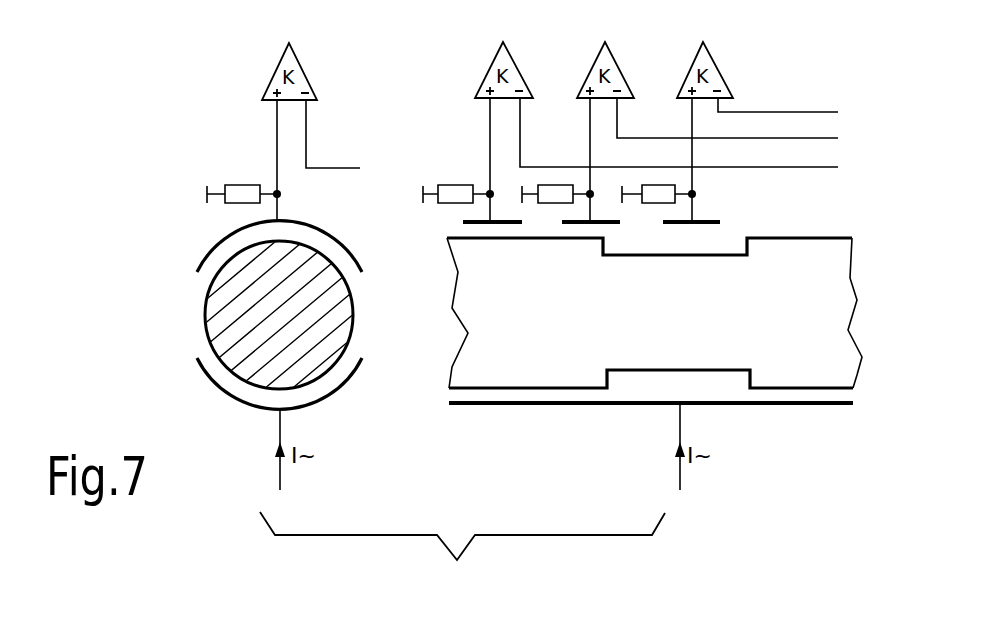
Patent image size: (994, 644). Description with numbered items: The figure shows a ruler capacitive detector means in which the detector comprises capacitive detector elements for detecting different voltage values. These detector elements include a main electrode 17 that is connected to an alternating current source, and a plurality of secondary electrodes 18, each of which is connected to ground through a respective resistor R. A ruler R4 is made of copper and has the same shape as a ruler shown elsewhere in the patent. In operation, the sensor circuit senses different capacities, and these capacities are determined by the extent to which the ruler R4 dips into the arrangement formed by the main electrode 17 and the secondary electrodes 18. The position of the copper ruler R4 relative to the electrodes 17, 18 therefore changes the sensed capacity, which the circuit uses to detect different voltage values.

The main electrode 17 is at (327, 393).
The secondary electrodes 18 is at (327, 235).
The resistor R is at (452, 192).
The ruler R4 is at (825, 252).